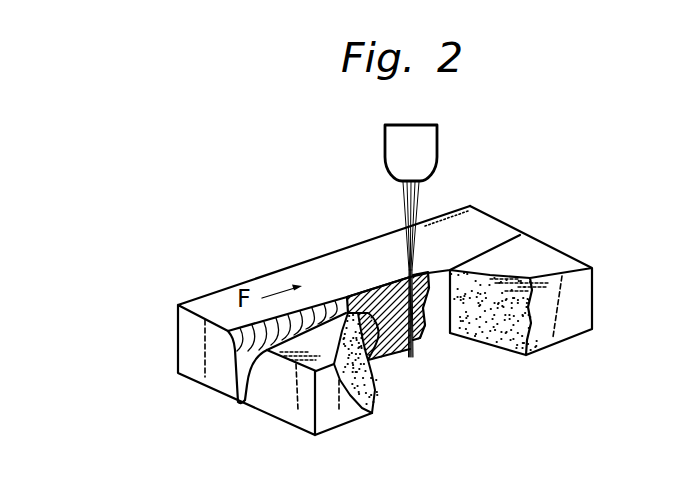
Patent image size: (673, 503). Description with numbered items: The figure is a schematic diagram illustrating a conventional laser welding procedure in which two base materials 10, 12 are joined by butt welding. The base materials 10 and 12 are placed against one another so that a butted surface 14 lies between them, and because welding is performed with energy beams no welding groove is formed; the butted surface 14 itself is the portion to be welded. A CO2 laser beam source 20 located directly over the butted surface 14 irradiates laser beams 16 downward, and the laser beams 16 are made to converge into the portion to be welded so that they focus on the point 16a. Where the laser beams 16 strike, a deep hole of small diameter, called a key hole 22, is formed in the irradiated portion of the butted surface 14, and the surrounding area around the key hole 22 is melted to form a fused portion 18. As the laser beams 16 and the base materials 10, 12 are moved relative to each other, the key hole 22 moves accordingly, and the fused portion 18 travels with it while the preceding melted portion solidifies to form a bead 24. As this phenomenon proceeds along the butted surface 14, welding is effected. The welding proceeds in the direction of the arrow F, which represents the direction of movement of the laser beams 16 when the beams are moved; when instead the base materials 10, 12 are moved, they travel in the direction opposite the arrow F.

The base material 10 is at (487, 220).
The base material 12 is at (563, 261).
The butted surface 14 is at (522, 241).
The laser beams 16 is at (411, 203).
The focus point 16a is at (400, 290).
The fused portion 18 is at (424, 334).
The CO2 laser beam source 20 is at (388, 152).
The key hole 22 is at (381, 286).
The bead 24 is at (381, 358).